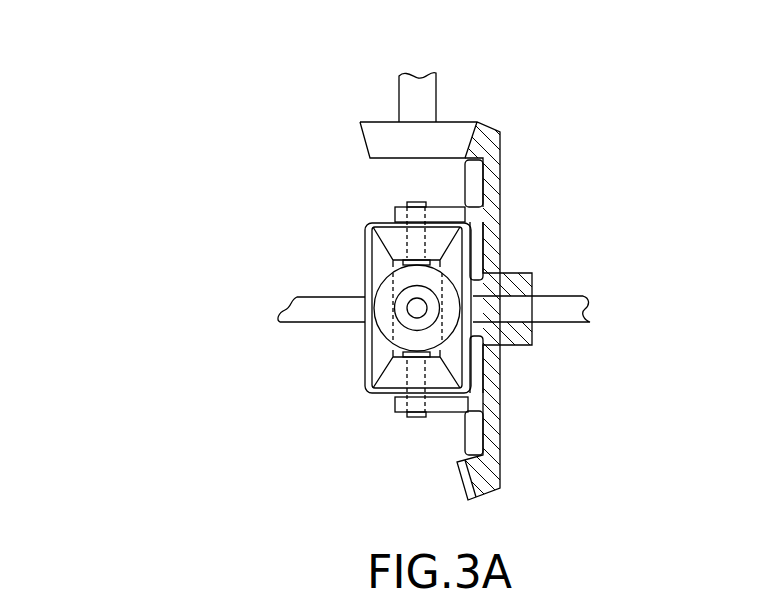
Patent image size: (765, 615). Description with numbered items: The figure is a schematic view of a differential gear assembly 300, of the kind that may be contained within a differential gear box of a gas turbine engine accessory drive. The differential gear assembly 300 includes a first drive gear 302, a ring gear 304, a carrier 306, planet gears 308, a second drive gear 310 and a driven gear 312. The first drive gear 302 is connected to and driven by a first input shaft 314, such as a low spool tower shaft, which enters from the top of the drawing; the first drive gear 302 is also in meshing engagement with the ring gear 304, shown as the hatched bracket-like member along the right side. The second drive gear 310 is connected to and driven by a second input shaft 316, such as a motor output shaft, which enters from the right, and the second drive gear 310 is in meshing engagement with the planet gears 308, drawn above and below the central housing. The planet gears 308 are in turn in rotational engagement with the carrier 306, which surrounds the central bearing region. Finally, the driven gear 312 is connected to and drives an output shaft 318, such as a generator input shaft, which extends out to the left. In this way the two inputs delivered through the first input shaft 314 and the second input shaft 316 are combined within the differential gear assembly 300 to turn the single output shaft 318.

The differential gear assembly 300 is at (134, 88).
The first drive gear 302 is at (368, 132).
The ring gear 304 is at (487, 200).
The carrier 306 is at (363, 262).
The planet gears 308 is at (383, 233).
The second drive gear 310 is at (450, 353).
The driven gear 312 is at (380, 355).
The first input shaft 314 is at (423, 92).
The second input shaft 316 is at (558, 307).
The output shaft 318 is at (298, 300).